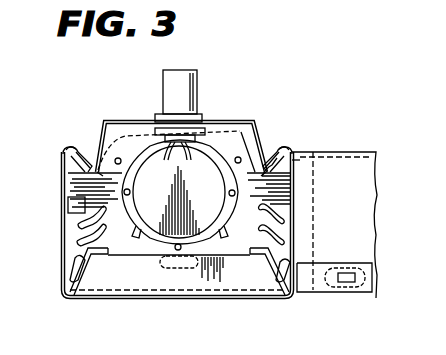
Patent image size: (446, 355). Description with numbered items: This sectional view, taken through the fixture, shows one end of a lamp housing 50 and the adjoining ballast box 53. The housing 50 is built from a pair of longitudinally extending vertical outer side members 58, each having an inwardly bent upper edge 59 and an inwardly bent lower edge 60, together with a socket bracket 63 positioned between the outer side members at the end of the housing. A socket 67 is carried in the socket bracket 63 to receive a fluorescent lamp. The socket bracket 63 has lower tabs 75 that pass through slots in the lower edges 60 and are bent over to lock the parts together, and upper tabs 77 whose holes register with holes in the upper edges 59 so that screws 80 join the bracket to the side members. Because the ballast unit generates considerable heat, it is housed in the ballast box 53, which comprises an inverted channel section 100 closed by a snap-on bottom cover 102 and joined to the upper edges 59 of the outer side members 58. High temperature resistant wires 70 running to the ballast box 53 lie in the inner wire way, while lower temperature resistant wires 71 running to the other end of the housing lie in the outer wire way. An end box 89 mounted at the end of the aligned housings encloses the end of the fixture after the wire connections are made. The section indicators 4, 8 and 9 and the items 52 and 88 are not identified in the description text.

The section line 4- 4 is at (192, 58).
The section line 8- 8 is at (348, 157).
The section line 9- 9 is at (313, 245).
The housing 50 is at (130, 297).
The lamp socket 52 is at (189, 92).
The ballast box 53 is at (378, 180).
The outer side member 58 is at (62, 172).
The upper edge 59 is at (72, 148).
The lower edge 60 is at (82, 290).
The socket bracket 63 is at (271, 160).
The socket 67 is at (208, 158).
The high temperature resistant wires 70 is at (283, 238).
The lower temperature resistant wires 71 is at (80, 230).
The lower tab 75 is at (72, 266).
The upper tab 77 is at (67, 197).
The screw 80 is at (86, 166).
The cover 88 is at (119, 120).
The end box 89 is at (197, 299).
The inverted channel section 100 is at (356, 232).
The bottom cover 102 is at (366, 292).